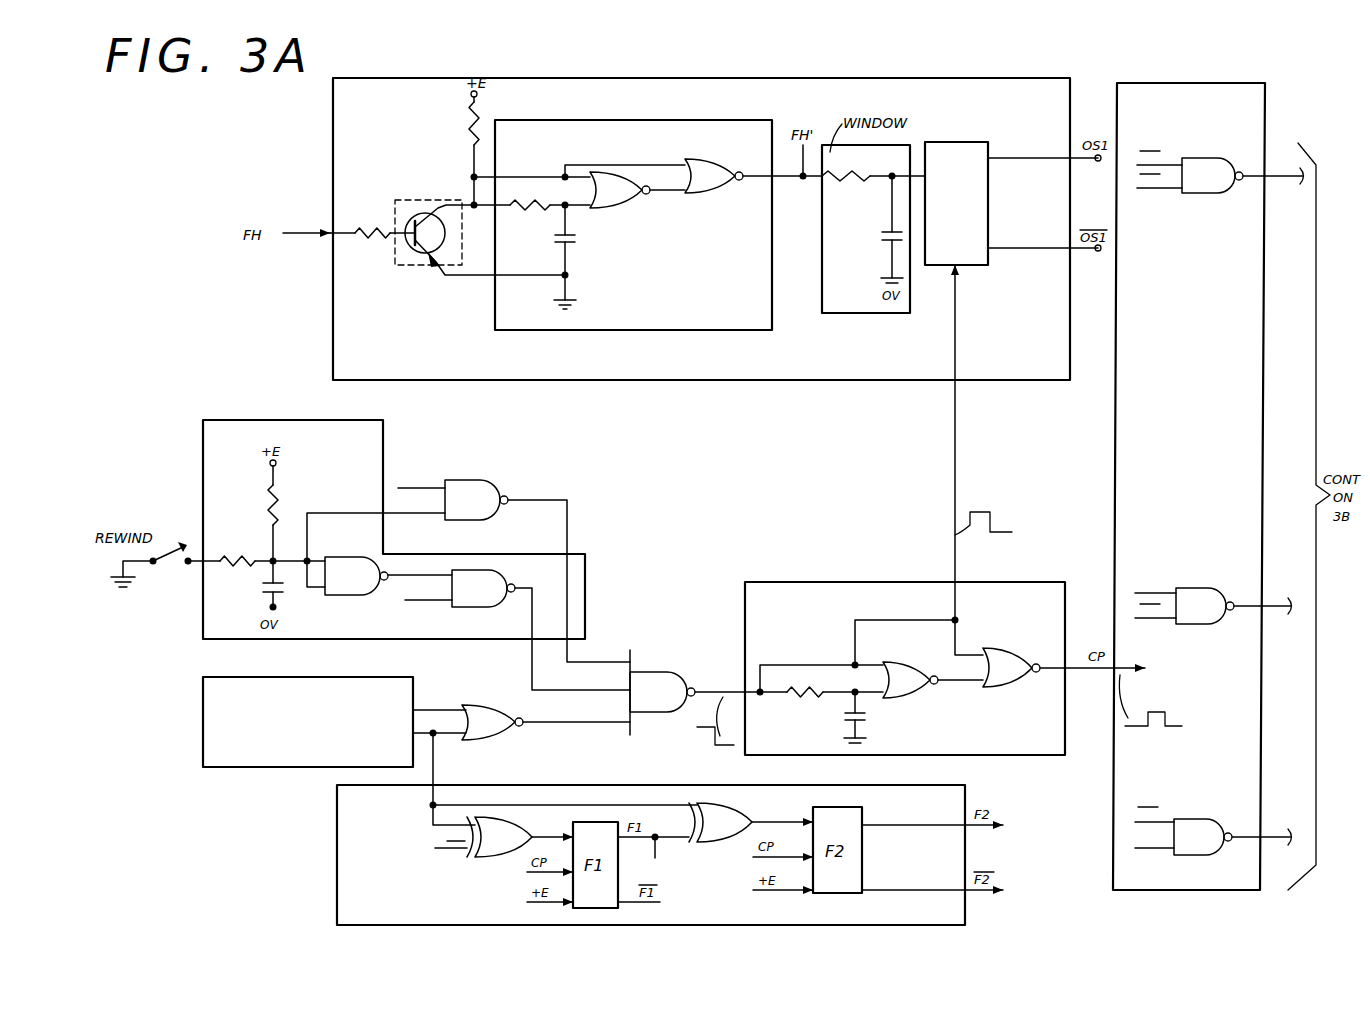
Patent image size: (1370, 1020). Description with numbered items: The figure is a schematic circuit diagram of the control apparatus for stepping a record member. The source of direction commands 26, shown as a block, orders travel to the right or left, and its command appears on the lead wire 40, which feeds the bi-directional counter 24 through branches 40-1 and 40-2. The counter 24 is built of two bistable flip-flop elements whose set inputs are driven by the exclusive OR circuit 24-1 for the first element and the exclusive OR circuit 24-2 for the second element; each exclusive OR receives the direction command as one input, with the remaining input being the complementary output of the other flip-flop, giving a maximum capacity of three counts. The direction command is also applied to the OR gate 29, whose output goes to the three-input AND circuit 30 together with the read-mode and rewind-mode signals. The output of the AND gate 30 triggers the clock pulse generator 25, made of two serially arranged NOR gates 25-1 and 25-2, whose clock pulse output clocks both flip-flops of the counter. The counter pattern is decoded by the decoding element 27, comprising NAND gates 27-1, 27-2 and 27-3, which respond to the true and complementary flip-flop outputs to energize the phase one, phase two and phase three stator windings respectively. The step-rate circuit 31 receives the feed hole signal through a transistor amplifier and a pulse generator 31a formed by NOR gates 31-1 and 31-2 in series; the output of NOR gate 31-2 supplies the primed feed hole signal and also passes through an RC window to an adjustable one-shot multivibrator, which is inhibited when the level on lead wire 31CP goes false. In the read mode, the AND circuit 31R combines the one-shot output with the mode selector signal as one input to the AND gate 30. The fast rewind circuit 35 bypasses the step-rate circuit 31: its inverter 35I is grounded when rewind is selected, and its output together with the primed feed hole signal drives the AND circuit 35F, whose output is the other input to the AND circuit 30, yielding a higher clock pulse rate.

The step-rate circuit 31 is at (852, 55).
The NOR gate flip-flop section 31a is at (592, 132).
The NOR gate 31-1 is at (616, 208).
The NOR gate 31-2 is at (710, 193).
The lead wire 31CP is at (955, 465).
The AND circuit 31R is at (483, 490).
The decoding element 27 is at (1255, 98).
The NAND gate 27-1 is at (1200, 193).
The NAND gate 27-2 is at (1190, 590).
The NAND gate 27-3 is at (1188, 820).
The fast rewind circuit 35 is at (550, 577).
The inverter 35I is at (357, 595).
The AND circuit 35F is at (472, 607).
The source of direction commands 26 is at (372, 684).
The OR gate 29 is at (470, 706).
The AND circuit 30 is at (650, 676).
The lead wire 40 is at (438, 776).
The direction signal branch 40-1 is at (440, 838).
The direction signal branch 40-2 is at (563, 805).
The bi-directional counter 24 is at (337, 862).
The exclusive OR circuit 24-1 is at (506, 874).
The exclusive OR circuit 24-2 is at (720, 845).
The clock pulse generator 25 is at (895, 601).
The NOR gate 25-1 is at (942, 640).
The NOR gate 25-2 is at (1005, 652).